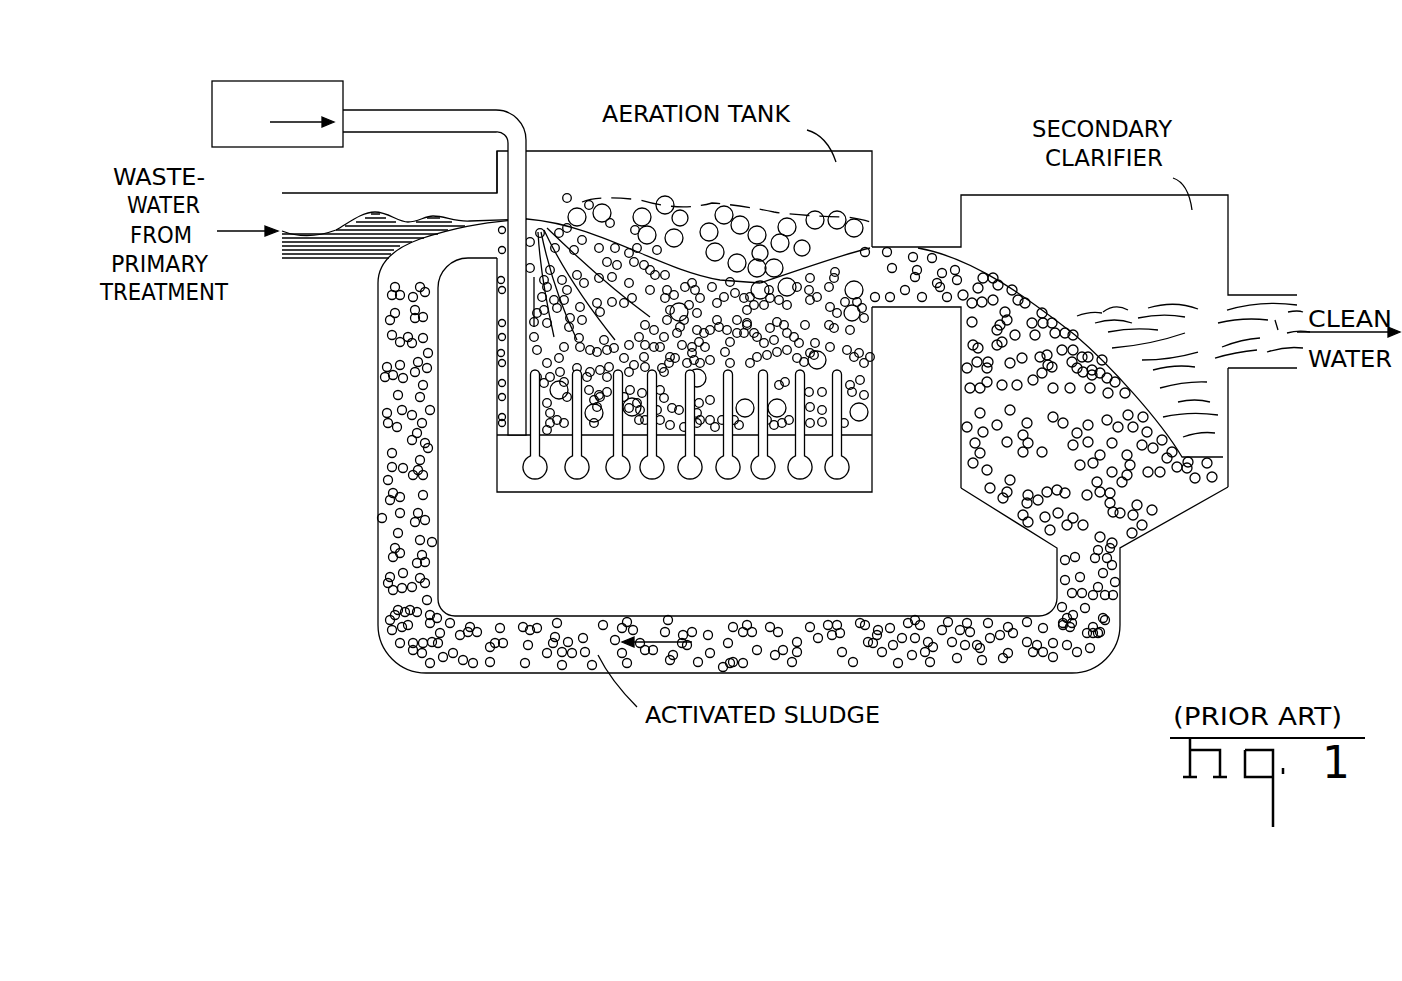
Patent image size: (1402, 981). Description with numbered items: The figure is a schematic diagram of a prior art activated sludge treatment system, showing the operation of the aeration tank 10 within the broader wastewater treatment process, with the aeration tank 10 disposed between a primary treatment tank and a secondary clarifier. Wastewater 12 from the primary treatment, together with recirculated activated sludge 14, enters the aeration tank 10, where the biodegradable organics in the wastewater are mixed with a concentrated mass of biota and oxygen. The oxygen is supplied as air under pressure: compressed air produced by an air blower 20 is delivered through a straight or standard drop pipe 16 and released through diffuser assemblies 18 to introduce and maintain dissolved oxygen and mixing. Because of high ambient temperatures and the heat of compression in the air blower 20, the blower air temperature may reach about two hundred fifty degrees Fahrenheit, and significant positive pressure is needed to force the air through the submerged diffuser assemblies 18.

The aeration tank 10 is at (865, 150).
The wastewater 12 is at (364, 212).
The recirculated activated sludge 14 is at (410, 293).
The standard drop pipe 16 is at (527, 190).
The diffuser assemblies 18 is at (843, 447).
The air blower 20 is at (250, 81).